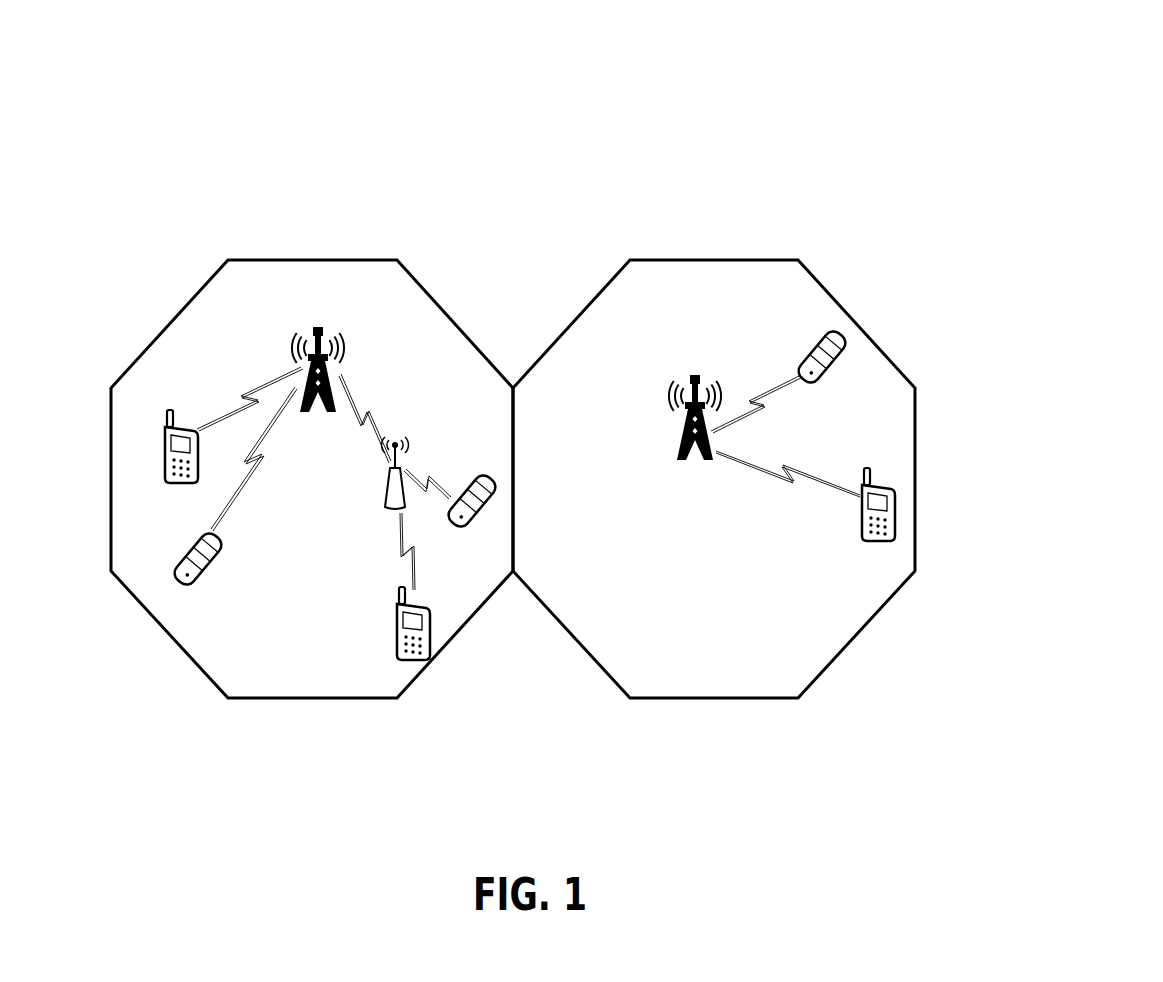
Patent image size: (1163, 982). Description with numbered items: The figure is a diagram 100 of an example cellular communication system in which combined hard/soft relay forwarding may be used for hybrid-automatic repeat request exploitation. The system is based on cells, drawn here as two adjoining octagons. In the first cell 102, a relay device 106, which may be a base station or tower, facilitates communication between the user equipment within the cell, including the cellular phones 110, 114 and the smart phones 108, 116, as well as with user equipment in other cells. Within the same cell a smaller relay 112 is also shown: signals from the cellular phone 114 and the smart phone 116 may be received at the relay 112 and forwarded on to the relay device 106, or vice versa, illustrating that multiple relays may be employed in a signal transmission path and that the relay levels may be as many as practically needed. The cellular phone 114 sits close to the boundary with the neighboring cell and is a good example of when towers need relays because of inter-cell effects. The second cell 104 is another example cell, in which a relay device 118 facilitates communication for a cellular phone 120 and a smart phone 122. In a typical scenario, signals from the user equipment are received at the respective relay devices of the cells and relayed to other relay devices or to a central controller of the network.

The diagram 100 is at (996, 104).
The cell 102 is at (348, 561).
The cell 104 is at (734, 616).
The relay device 106 is at (293, 327).
The smart phone 108 is at (147, 425).
The cellular phone 110 is at (175, 598).
The relay 112 is at (401, 434).
The cellular phone 114 is at (491, 470).
The smart phone 116 is at (394, 649).
The relay device 118 is at (668, 375).
The cellular phone 120 is at (834, 325).
The smart phone 122 is at (901, 480).